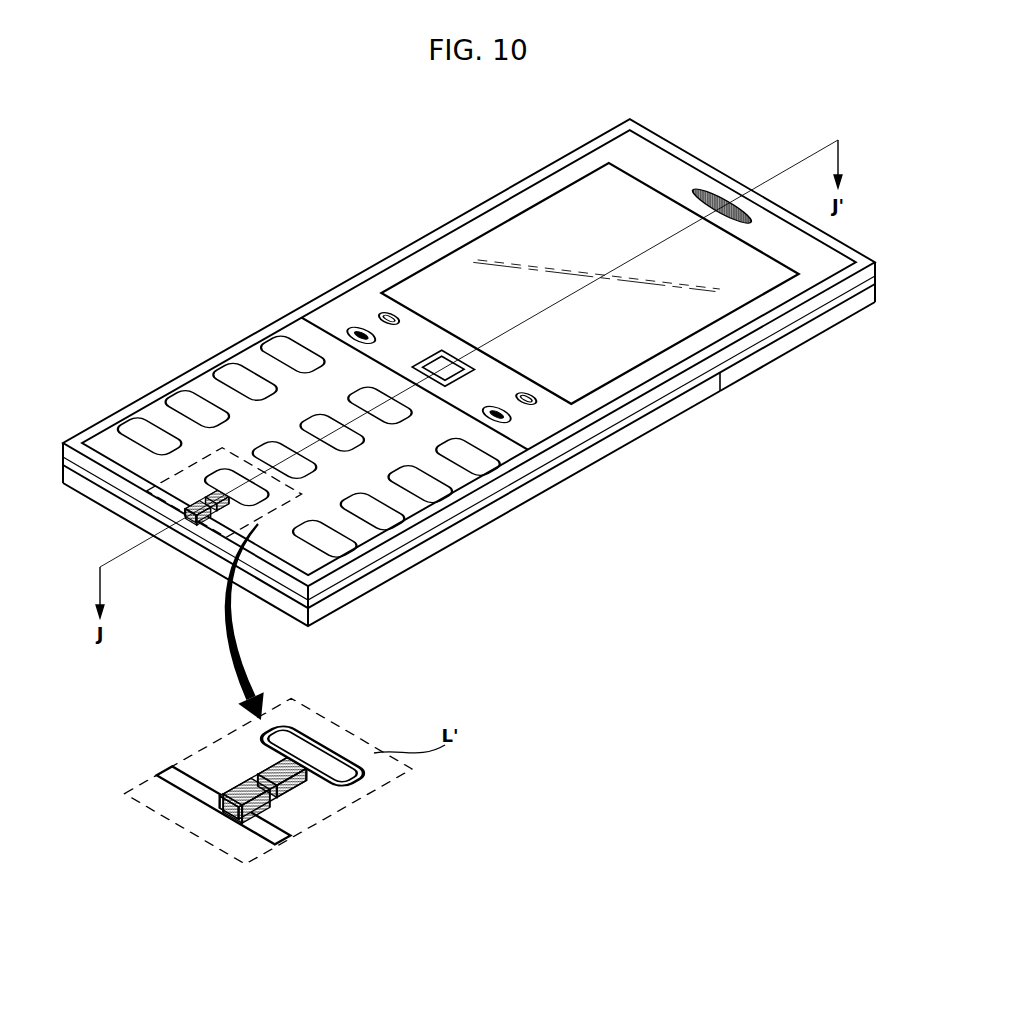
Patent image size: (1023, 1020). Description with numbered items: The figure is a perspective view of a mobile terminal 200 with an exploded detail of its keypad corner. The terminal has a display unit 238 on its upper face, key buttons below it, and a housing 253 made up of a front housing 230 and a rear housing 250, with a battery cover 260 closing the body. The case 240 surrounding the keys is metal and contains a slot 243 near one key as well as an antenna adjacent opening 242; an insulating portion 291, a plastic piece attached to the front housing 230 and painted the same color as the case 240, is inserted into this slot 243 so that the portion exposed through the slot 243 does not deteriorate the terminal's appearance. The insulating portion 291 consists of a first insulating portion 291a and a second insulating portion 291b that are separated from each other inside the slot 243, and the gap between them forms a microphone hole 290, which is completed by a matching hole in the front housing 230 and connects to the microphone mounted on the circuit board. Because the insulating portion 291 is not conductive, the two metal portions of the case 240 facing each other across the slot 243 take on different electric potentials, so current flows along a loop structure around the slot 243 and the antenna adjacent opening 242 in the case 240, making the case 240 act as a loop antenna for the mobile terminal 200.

The mobile terminal 200 is at (925, 161).
The front housing 230 is at (808, 315).
The display unit 238 is at (603, 224).
The case 240 is at (150, 415).
The antenna adjacent opening 242 is at (300, 725).
The slot 243 is at (220, 795).
The rear housing 250 is at (773, 347).
The housing 253 is at (897, 367).
The battery cover 260 is at (643, 423).
The microphone hole 290 is at (305, 772).
The insulating portion 291 is at (177, 699).
The first insulating portion 291a is at (226, 793).
The second insulating portion 291b is at (268, 772).